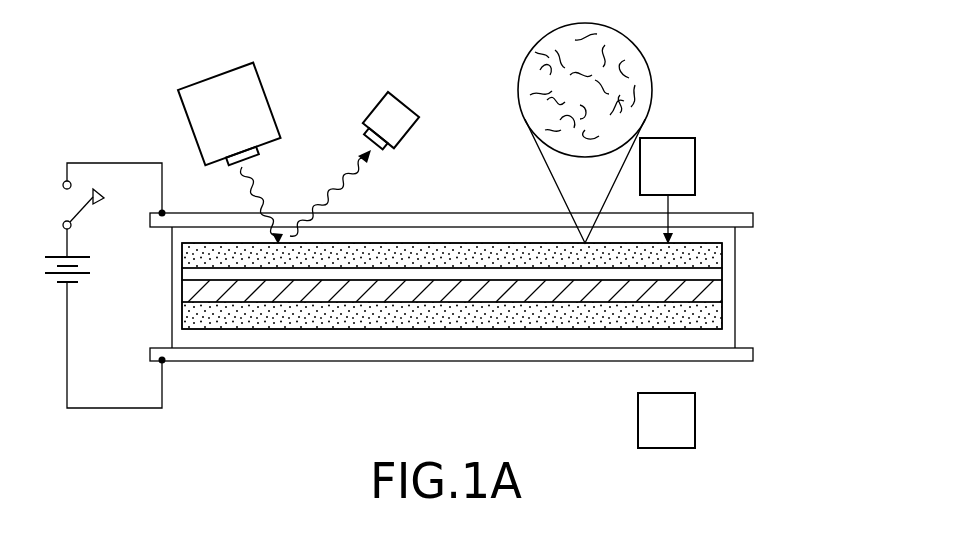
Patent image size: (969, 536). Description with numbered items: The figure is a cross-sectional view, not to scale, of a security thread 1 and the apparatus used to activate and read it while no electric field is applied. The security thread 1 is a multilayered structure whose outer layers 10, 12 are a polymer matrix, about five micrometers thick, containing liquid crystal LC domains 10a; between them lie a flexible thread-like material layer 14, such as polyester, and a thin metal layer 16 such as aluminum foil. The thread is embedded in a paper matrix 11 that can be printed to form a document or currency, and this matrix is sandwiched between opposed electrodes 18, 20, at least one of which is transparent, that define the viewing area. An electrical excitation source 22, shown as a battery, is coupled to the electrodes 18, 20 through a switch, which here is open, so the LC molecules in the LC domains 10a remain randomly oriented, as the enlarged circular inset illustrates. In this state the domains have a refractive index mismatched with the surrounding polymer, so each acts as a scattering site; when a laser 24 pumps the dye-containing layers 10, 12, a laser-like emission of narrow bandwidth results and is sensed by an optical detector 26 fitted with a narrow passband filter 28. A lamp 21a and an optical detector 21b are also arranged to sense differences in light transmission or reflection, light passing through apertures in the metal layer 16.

The security thread 1 is at (270, 338).
The outer layer 10 is at (722, 251).
The LC domains 10a is at (632, 42).
The paper matrix 11 is at (342, 343).
The outer layer 12 is at (722, 326).
The flexible thread-like material layer 14 is at (722, 275).
The thin metal layer 16 is at (722, 298).
The electrode 18 is at (735, 213).
The electrode 20 is at (732, 361).
The lamp 21a is at (696, 140).
The optical detector 21b is at (684, 462).
The electrical excitation source 22 is at (62, 284).
The laser 24 is at (217, 75).
The optical detector 26 is at (372, 146).
The narrow passband filter 28 is at (372, 164).